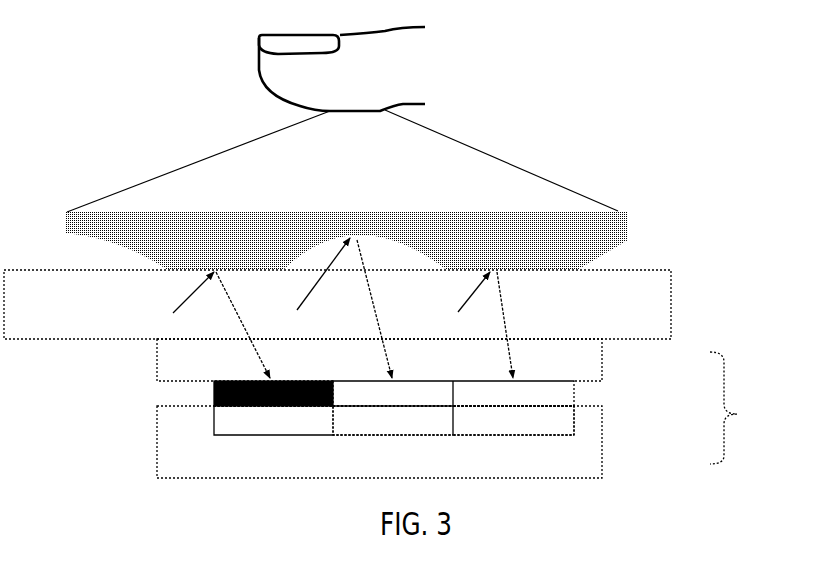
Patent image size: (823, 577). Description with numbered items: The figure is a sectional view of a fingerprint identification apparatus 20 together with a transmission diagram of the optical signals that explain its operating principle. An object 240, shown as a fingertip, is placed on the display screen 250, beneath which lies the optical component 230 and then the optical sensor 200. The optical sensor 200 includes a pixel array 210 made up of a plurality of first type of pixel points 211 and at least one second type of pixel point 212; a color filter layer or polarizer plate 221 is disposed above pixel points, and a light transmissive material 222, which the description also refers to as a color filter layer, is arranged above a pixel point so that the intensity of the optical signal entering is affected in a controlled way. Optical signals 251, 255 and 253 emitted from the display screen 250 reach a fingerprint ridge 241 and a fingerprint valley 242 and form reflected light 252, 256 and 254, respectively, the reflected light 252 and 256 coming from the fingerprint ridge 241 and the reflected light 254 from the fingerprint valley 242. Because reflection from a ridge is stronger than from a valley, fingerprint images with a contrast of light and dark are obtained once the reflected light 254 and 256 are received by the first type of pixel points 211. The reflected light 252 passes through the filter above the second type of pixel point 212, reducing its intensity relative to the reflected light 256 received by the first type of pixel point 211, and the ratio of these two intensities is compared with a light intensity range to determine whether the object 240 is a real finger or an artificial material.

The fingerprint identification apparatus 20 is at (745, 408).
The optical sensor 200 is at (602, 454).
The pixel array 210 is at (214, 418).
The first type of pixel points 211 is at (453, 421).
The second type of pixel point 212 is at (273, 421).
The color filter layer or polarizer plate 221 is at (453, 393).
The light transmissive material 222 is at (273, 393).
The optical component 230 is at (602, 361).
The object 240 is at (385, 69).
The fingerprint ridge 241 is at (342, 186).
The fingerprint valley 242 is at (346, 229).
The display screen 250 is at (671, 305).
The optical signal 251 is at (177, 305).
The reflected light 252 is at (246, 325).
The optical signal 253 is at (319, 288).
The reflected light 254 is at (386, 309).
The optical signal 255 is at (466, 305).
The reflected light 256 is at (525, 325).